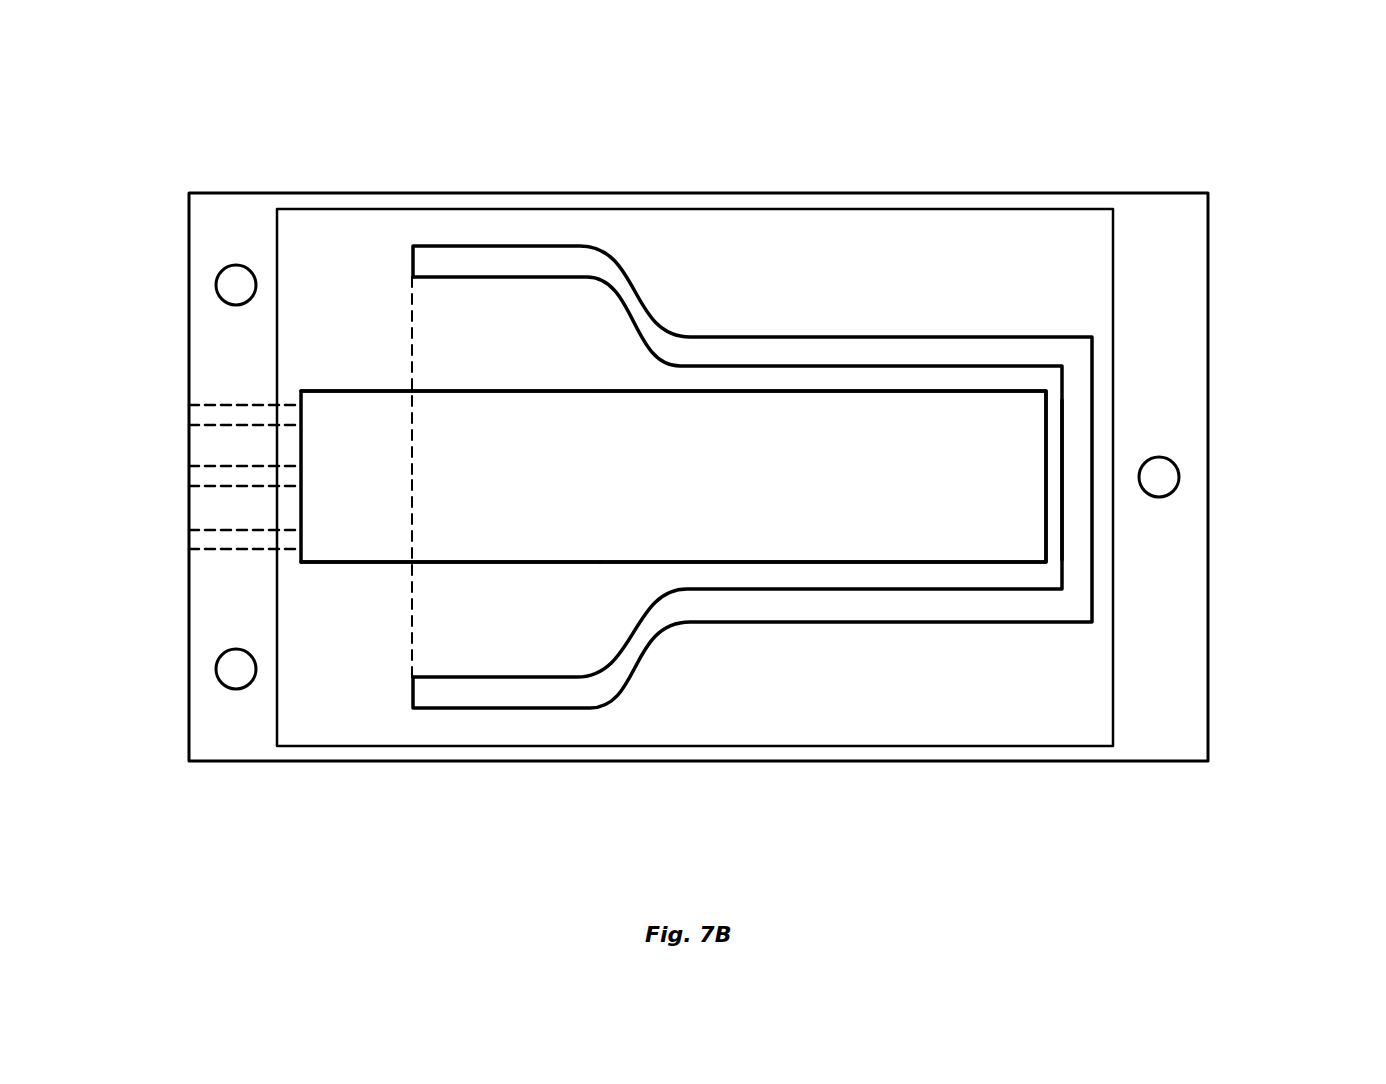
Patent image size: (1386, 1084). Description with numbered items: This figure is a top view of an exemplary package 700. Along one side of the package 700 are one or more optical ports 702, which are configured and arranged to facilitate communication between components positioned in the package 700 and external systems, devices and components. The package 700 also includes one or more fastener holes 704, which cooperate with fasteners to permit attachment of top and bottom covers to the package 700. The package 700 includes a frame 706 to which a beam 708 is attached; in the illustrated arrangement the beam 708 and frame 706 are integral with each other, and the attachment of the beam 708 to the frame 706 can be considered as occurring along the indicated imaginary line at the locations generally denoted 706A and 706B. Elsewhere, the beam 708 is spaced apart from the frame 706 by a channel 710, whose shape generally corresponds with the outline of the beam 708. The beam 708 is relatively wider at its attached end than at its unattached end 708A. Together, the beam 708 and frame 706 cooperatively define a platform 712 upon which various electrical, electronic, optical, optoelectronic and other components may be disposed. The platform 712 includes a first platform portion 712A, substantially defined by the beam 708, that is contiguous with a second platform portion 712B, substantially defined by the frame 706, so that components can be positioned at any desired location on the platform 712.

The package 700 is at (673, 163).
The optical ports 702 is at (188, 543).
The fastener holes 704 is at (232, 280).
The frame 706 is at (982, 704).
The attachment location 706A is at (412, 323).
The attachment location 706B is at (412, 627).
The beam 708 is at (590, 617).
The unattached end 708A is at (1054, 423).
The channel 710 is at (1004, 348).
The platform 712 is at (755, 525).
The first platform portion 712A is at (475, 533).
The second platform portion 712B is at (363, 539).